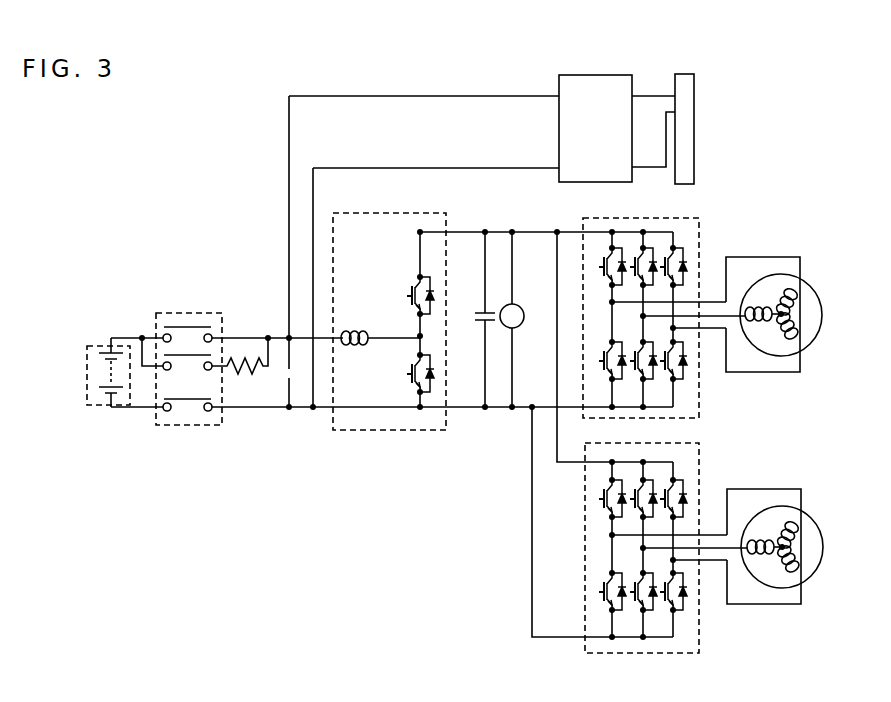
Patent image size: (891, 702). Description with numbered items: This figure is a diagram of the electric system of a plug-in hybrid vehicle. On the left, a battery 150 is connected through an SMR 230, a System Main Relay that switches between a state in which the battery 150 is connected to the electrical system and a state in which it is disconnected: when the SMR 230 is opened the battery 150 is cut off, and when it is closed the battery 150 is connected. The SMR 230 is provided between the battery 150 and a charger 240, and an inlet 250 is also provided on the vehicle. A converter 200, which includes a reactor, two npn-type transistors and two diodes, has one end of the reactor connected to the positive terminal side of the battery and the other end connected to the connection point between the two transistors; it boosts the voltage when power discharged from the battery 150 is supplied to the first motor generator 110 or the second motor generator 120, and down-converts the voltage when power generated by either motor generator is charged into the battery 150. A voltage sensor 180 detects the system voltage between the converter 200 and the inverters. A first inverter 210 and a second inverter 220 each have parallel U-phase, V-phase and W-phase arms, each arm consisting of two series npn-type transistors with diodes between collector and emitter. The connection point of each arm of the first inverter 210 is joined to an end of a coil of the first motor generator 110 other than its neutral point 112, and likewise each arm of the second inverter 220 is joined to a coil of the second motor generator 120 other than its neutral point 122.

The first motor generator 110 is at (795, 300).
The neutral point 112 is at (780, 312).
The second motor generator 120 is at (795, 532).
The neutral point 122 is at (781, 545).
The battery 150 is at (93, 346).
The voltage sensor 180 is at (520, 327).
The converter 200 is at (437, 213).
The first inverter 210 is at (699, 386).
The second inverter 220 is at (699, 615).
The SMR 230 is at (186, 313).
The charger 240 is at (558, 125).
The inlet 250 is at (696, 130).